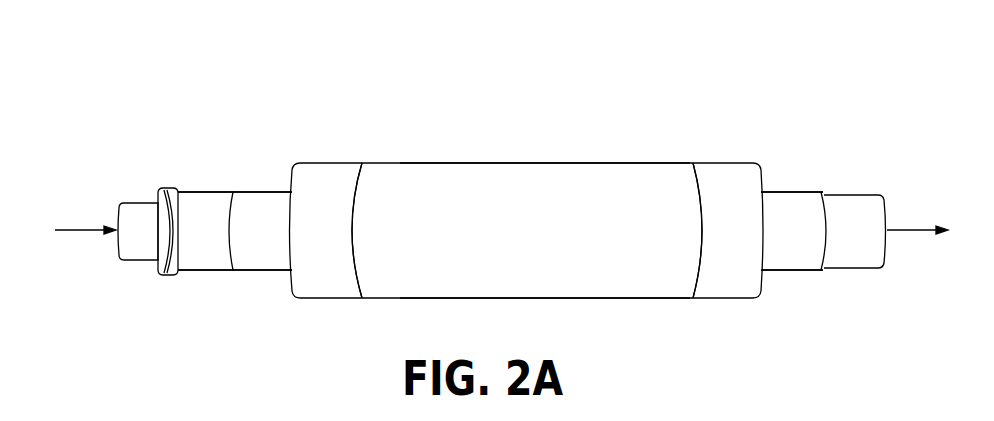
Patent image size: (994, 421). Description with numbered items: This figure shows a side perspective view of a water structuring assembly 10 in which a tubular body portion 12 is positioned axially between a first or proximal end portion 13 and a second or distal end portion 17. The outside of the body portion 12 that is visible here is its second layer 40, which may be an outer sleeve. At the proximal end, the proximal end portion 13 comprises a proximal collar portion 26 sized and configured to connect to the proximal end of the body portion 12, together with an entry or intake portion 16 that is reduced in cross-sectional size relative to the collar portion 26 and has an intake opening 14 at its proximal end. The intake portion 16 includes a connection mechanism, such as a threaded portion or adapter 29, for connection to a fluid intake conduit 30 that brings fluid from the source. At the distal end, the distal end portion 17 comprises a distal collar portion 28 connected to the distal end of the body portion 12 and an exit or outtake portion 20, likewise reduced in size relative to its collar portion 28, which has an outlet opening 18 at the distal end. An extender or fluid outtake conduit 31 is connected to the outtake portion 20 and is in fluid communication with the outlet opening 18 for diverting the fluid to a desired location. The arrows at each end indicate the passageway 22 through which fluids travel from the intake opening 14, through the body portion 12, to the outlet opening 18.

The water structuring assembly 10 is at (516, 85).
The body portion 12 is at (611, 143).
The proximal end portion 13 is at (277, 122).
The intake opening 14 is at (230, 253).
The intake portion 16 is at (267, 202).
The distal end portion 17 is at (773, 162).
The outlet opening 18 is at (823, 250).
The outlet portion 20 is at (788, 208).
The passageway 22 is at (90, 227).
The proximal collar portion 26 is at (318, 177).
The distal collar portion 28 is at (718, 173).
The threaded portion or adapter 29 is at (198, 205).
The fluid intake conduit 30 is at (135, 208).
The fluid outtake conduit 31 is at (860, 202).
The second layer 40 is at (510, 180).